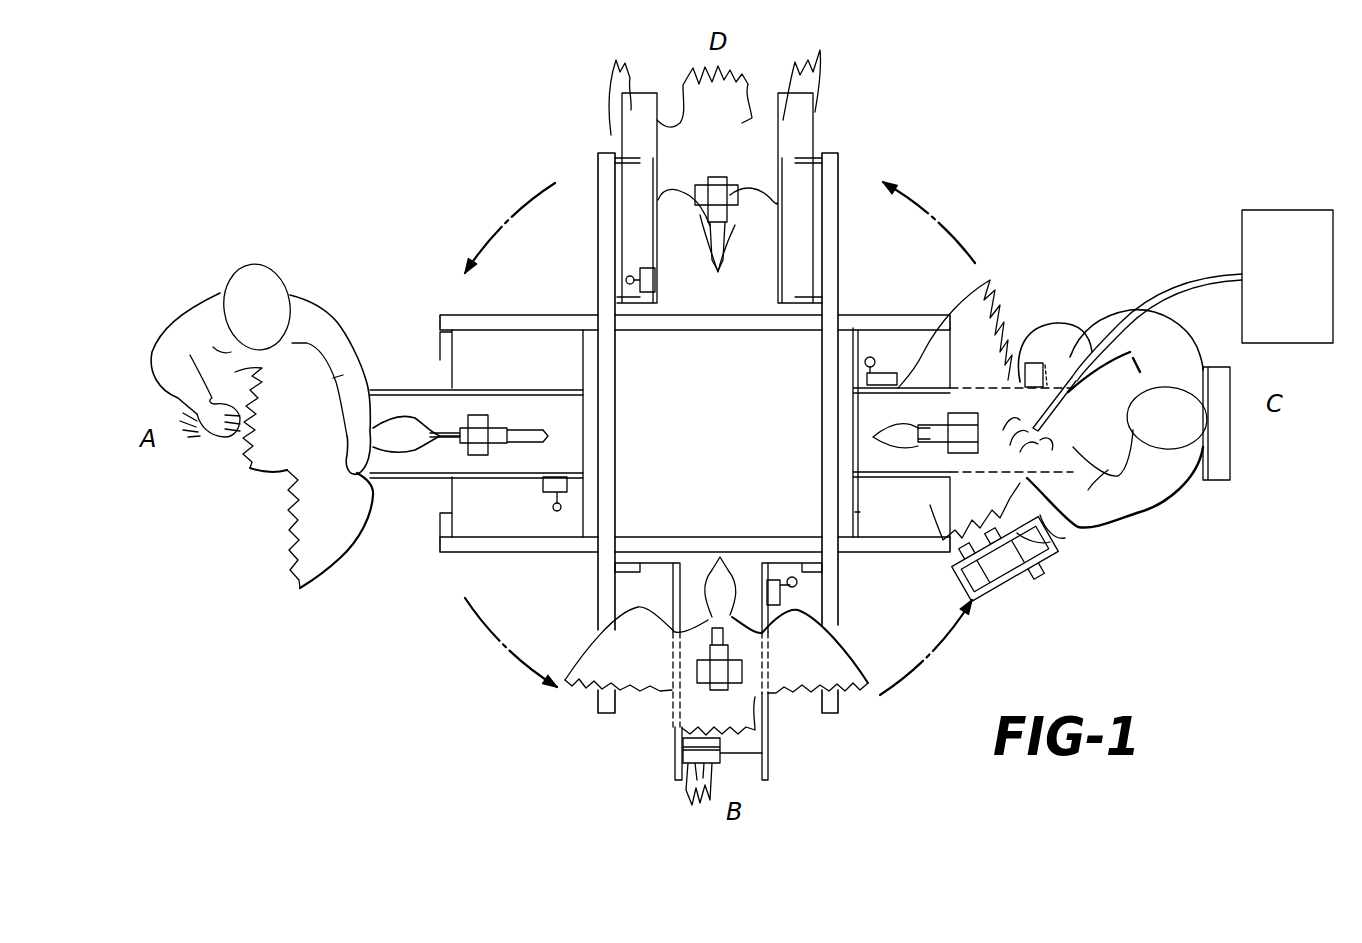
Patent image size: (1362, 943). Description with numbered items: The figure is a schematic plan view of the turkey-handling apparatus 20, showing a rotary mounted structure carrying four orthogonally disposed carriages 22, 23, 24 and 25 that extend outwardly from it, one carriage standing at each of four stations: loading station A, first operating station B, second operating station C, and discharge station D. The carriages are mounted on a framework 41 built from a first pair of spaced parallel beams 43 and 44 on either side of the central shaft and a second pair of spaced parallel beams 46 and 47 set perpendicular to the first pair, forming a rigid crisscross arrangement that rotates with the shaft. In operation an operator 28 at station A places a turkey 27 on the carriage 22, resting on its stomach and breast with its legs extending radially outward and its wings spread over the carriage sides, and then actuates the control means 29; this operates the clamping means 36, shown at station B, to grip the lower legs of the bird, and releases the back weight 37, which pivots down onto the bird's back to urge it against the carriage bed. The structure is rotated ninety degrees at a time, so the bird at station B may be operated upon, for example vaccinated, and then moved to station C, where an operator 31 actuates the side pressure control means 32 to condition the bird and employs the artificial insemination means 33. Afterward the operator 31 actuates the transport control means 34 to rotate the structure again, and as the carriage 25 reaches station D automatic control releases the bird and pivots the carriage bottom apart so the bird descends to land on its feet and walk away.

The poultry processing apparatus 20 is at (517, 188).
The carriage 22 is at (399, 348).
The carriage 23 is at (632, 723).
The carriage 24 is at (908, 552).
The carriage 25 is at (863, 130).
The turkey 27 is at (718, 156).
The operator 28 is at (200, 317).
The control means 29 is at (655, 287).
The operator 31 is at (1157, 487).
The side pressure control means 32 is at (1020, 368).
The artificial insemination means 33 is at (1242, 222).
The transport control means 34 is at (997, 583).
The clamping means 36 is at (713, 767).
The back weight 37 is at (490, 433).
The framework 41 is at (547, 307).
The beam 43 is at (503, 547).
The beam 44 is at (695, 433).
The beam 46 is at (597, 597).
The beam 47 is at (835, 623).